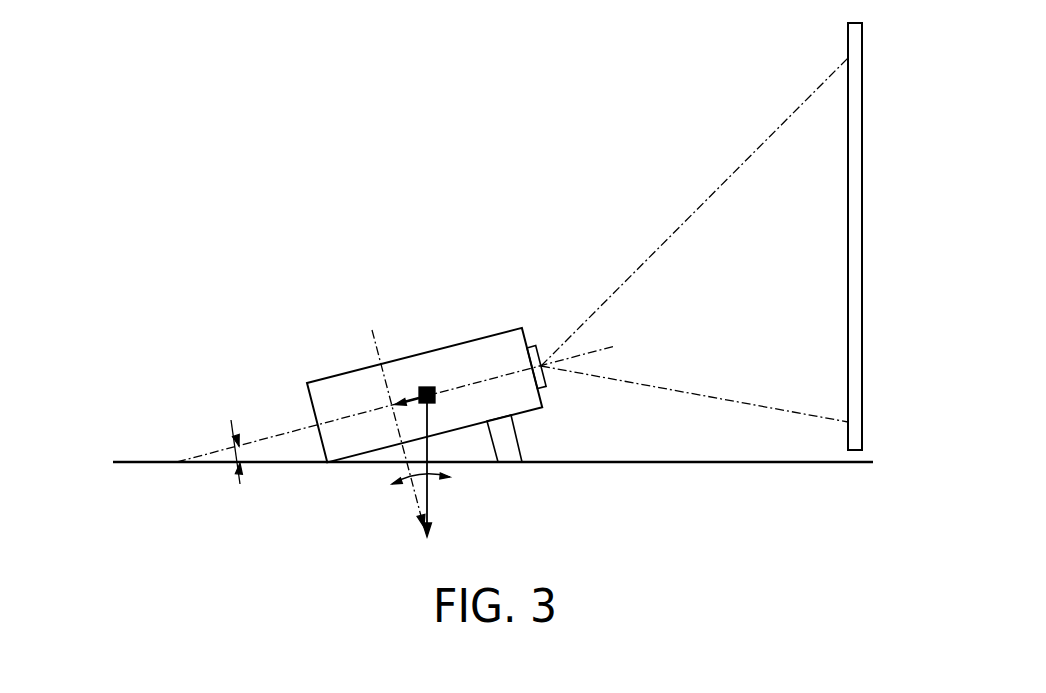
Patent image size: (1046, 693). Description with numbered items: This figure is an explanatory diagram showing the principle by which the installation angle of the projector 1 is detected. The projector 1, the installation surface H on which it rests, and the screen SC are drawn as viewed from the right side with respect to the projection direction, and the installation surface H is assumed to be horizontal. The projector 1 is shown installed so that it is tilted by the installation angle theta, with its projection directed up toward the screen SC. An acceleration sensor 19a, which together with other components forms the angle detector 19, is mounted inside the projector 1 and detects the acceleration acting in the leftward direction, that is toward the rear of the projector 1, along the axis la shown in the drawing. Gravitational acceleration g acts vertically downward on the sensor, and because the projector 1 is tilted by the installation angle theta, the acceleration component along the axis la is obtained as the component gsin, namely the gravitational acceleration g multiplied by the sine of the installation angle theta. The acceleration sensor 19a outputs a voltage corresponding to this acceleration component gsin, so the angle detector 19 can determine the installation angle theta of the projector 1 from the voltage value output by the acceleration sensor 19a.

The projector 1 is at (540, 279).
The angle detector 19 is at (432, 386).
The acceleration sensor 19a is at (453, 350).
The screen SC is at (848, 42).
The installation surface H is at (635, 461).
The axis la is at (284, 433).
The gravitational acceleration g is at (438, 466).
The acceleration component g·sinθ gsin is at (407, 390).
The installation angle θ theta is at (340, 460).